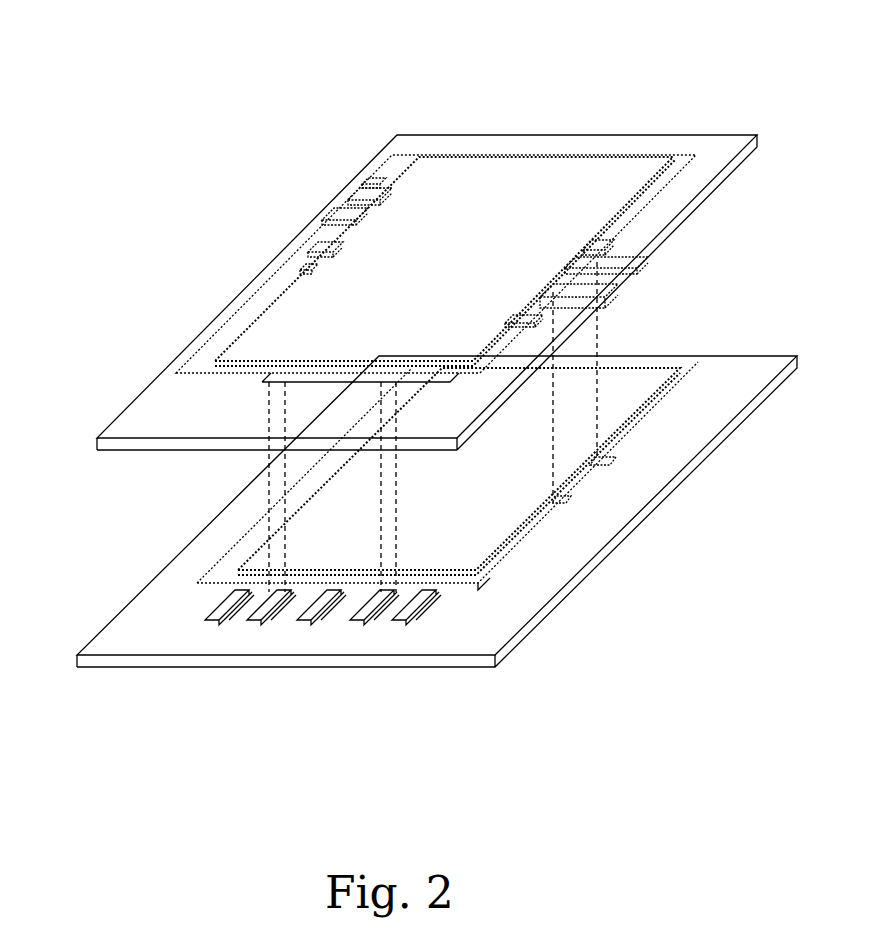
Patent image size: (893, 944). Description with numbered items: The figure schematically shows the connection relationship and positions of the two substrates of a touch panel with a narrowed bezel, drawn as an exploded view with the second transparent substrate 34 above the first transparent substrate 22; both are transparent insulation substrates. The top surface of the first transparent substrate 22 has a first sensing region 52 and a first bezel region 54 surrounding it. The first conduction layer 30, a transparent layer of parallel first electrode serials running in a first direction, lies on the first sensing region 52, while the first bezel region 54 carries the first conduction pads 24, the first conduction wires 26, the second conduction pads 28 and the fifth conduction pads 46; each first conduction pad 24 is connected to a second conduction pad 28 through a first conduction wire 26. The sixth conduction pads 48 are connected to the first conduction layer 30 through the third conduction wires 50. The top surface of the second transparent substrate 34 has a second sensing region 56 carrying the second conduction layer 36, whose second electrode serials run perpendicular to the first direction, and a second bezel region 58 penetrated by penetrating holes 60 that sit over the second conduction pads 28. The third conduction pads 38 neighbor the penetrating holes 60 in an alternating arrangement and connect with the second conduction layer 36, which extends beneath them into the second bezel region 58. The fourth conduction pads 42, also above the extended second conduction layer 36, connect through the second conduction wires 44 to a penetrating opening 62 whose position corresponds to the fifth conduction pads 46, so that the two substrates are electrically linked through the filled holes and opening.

The first transparent substrate 22 is at (110, 667).
The first conduction pads 24 is at (473, 532).
The first conduction wires 26 is at (530, 545).
The second conduction pads 28 is at (613, 455).
The first conduction layer 30 is at (430, 608).
The second transparent substrate 34 is at (421, 134).
The second conduction layer 36 is at (458, 183).
The third conduction pads 38 is at (612, 241).
The fourth conduction pads 42 is at (520, 318).
The second conduction wires 44 is at (490, 353).
The fifth conduction pads 46 is at (367, 620).
The sixth conduction pads 48 is at (307, 580).
The third conduction wires 50 is at (295, 605).
The first sensing region 52 is at (633, 375).
The first bezel region 54 is at (157, 648).
The second sensing region 56 is at (528, 190).
The second bezel region 58 is at (703, 155).
The penetrating holes 60 is at (640, 268).
The penetrating opening 62 is at (322, 380).